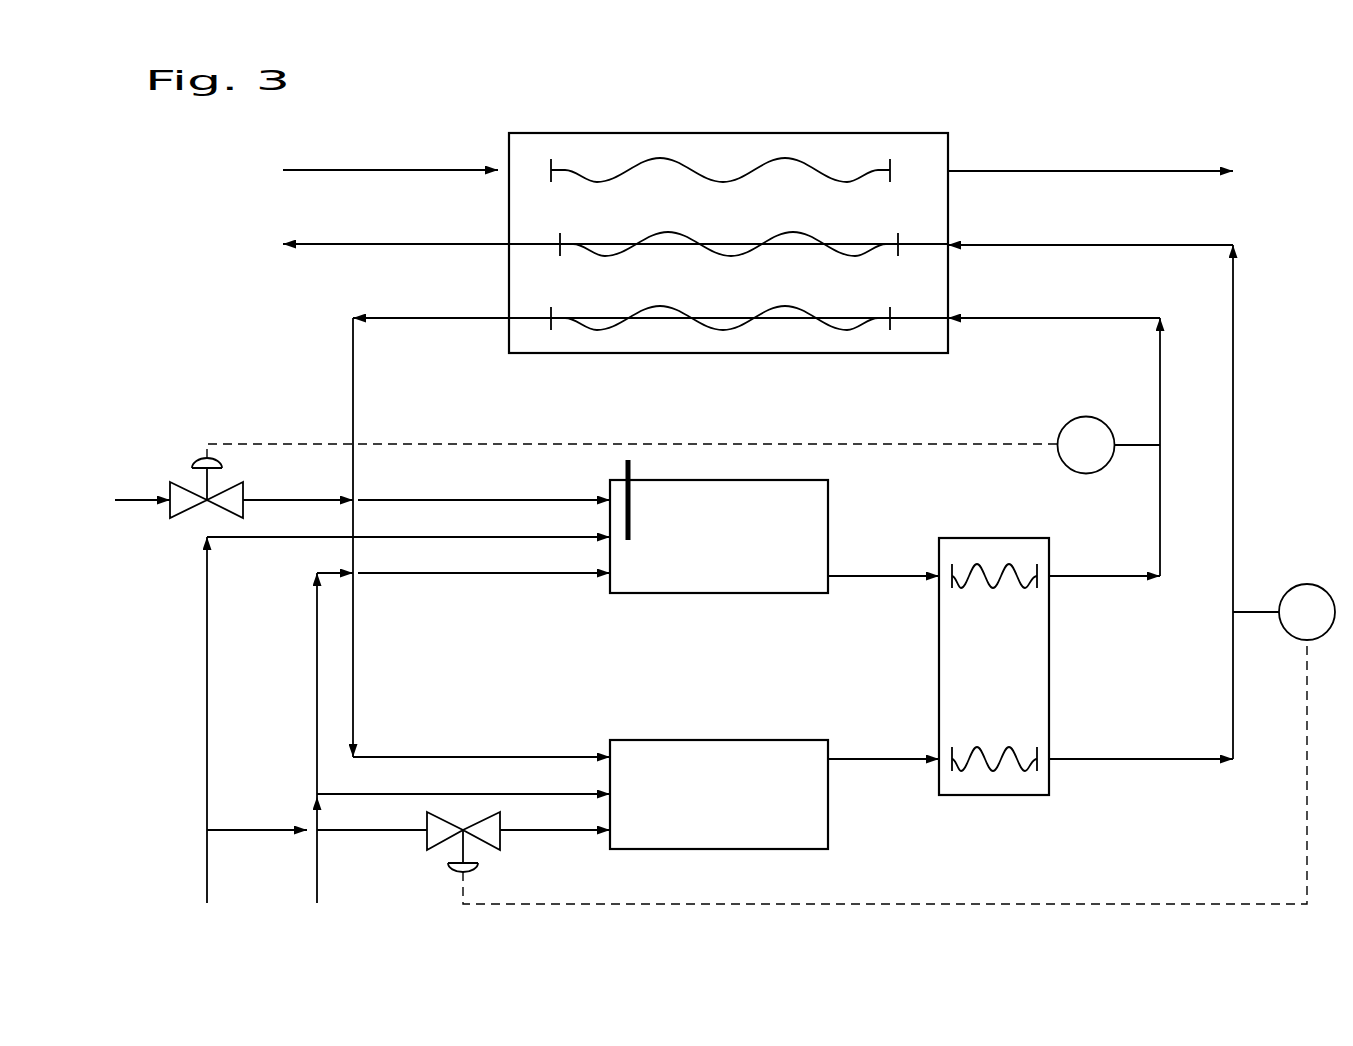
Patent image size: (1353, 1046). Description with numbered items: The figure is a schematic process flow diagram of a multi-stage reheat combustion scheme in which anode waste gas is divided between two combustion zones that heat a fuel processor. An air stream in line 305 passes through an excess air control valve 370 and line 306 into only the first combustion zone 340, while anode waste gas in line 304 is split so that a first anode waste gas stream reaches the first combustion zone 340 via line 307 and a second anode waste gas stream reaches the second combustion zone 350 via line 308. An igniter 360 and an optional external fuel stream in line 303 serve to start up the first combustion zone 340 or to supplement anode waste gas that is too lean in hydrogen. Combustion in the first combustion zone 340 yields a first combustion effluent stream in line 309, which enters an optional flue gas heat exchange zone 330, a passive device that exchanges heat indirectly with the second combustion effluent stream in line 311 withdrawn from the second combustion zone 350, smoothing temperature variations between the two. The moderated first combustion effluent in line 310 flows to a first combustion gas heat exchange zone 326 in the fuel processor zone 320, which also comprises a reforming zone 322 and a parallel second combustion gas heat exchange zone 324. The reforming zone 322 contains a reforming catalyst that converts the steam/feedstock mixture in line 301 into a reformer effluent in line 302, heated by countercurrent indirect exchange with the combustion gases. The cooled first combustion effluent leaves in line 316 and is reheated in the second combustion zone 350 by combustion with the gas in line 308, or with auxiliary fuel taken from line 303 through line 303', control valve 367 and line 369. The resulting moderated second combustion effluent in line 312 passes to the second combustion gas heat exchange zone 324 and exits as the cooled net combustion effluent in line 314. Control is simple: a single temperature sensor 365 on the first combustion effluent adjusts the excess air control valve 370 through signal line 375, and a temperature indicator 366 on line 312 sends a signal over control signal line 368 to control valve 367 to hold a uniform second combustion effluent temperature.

The steam/feedstock mixture line 301 is at (384, 168).
The reformer effluent line 302 is at (1087, 170).
The external fuel stream line 303 is at (408, 720).
The auxiliary fuel branch line 303' is at (317, 847).
The anode waste gas line 304 is at (318, 852).
The air stream line 305 is at (145, 496).
The air line 306 is at (452, 500).
The first anode waste gas stream line 307 is at (456, 574).
The second anode waste gas stream line 308 is at (474, 794).
The first combustion effluent stream line 309 is at (854, 575).
The moderated first combustion effluent stream line 310 is at (1087, 316).
The second combustion effluent stream line 311 is at (844, 758).
The moderated second combustion effluent stream line 312 is at (1087, 244).
The cooled net combustion effluent stream line 314 is at (384, 244).
The cooled first combustion effluent stream line 316 is at (450, 316).
The fuel processor zone 320 is at (805, 131).
The reforming zone 322 is at (756, 170).
The second combustion gas heat exchange zone 324 is at (772, 235).
The first combustion gas heat exchange zone 326 is at (773, 309).
The flue gas heat exchange zone 330 is at (1005, 798).
The first combustion zone 340 is at (688, 596).
The second combustion zone 350 is at (682, 738).
The igniter 360 is at (624, 468).
The temperature sensor 365 is at (1082, 418).
The temperature indicator 366 is at (1319, 585).
The control valve 367 is at (490, 850).
The control signal line 368 is at (819, 904).
The auxiliary fuel line 369 is at (526, 830).
The excess air control valve 370 is at (240, 482).
The signal line 375 is at (692, 444).